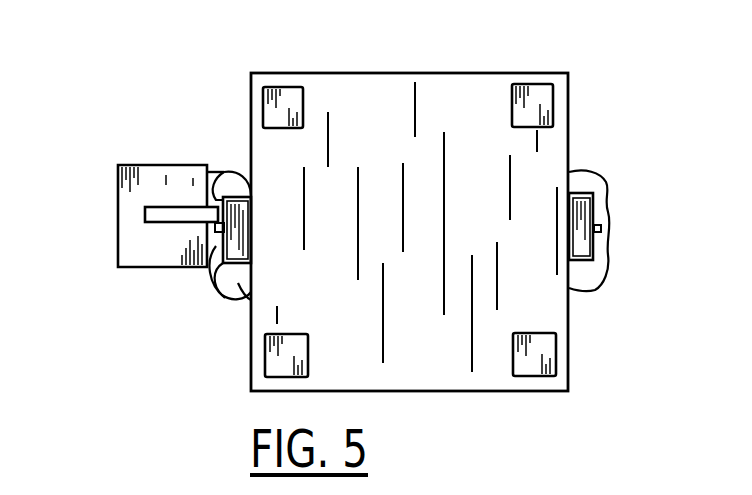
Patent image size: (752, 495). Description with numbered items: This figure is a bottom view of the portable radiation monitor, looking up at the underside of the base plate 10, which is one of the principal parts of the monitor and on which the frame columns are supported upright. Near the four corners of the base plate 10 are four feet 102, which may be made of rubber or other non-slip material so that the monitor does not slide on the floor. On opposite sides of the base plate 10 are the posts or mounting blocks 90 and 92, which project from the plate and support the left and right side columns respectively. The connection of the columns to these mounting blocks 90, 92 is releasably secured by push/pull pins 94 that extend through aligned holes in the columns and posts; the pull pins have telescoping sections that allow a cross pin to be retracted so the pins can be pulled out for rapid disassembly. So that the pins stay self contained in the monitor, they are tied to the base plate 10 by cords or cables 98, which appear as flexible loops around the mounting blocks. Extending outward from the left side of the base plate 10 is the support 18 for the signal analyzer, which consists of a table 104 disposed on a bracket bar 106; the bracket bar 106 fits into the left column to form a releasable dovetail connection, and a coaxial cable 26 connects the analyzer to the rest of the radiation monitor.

The base plate 10 is at (460, 86).
The support 18 is at (140, 285).
The coaxial cable 26 is at (224, 171).
The mounting block 90 is at (225, 287).
The mounting block 92 is at (603, 230).
The push/pull pin 94 is at (217, 226).
The cord 98 is at (232, 188).
The foot 102 is at (283, 95).
The table 104 is at (140, 183).
The bracket bar 106 is at (160, 223).